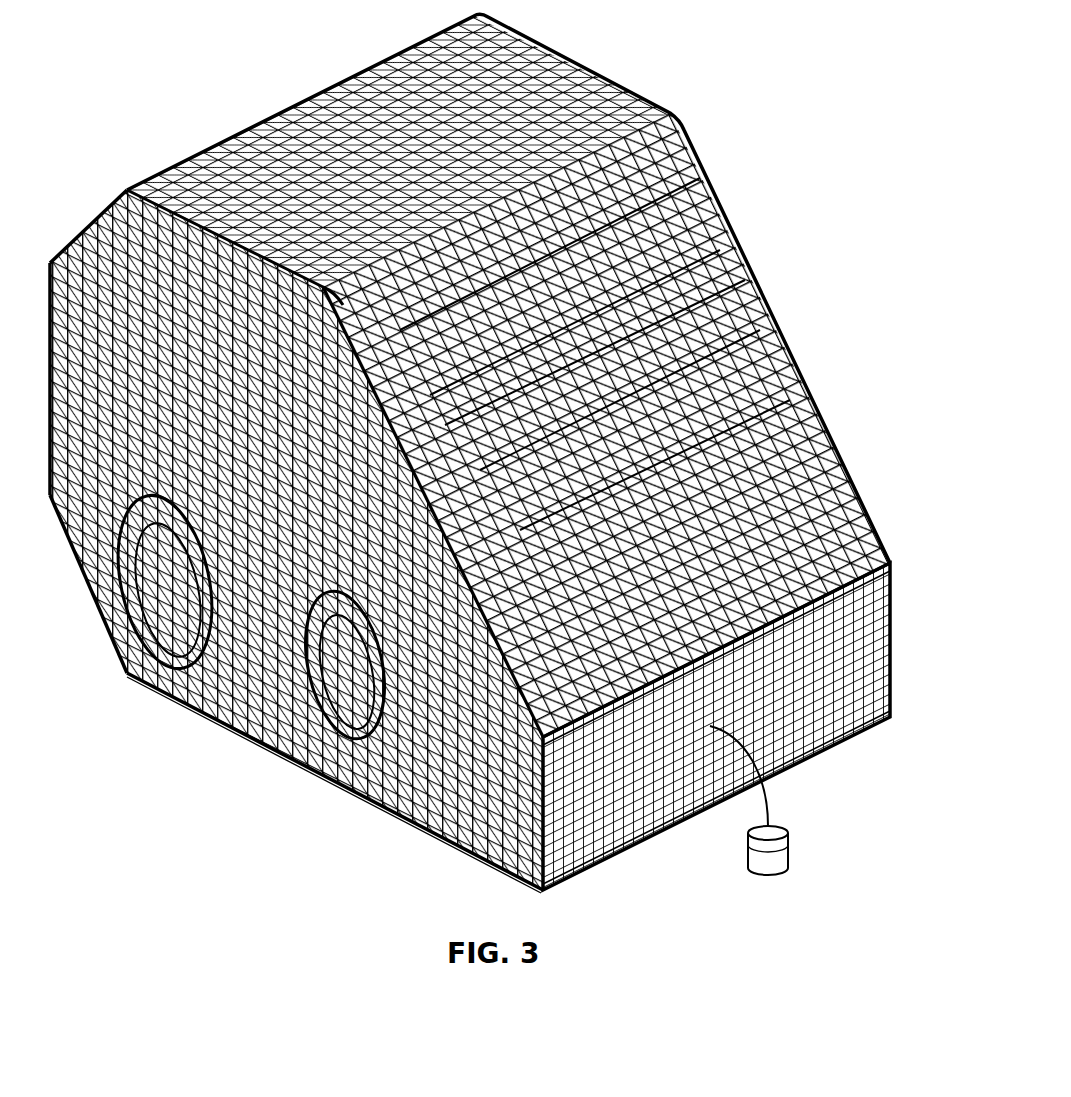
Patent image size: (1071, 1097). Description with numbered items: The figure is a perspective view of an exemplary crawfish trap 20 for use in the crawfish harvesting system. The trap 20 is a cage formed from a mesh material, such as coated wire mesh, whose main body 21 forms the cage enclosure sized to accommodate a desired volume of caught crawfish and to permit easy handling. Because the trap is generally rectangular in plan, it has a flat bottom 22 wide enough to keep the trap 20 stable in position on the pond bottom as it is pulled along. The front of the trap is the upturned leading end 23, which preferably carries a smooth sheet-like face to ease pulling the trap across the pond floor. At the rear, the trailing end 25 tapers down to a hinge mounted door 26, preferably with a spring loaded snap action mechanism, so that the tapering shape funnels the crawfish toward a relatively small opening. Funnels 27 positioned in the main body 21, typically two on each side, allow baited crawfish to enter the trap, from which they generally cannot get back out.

The crawfish trap 20 is at (706, 52).
The main body 21 is at (752, 273).
The flat bottom 22 is at (455, 843).
The leading end 23 is at (95, 627).
The trailing end 25 is at (900, 641).
The hinge mounted door 26 is at (612, 856).
The funnels 27 is at (123, 677).